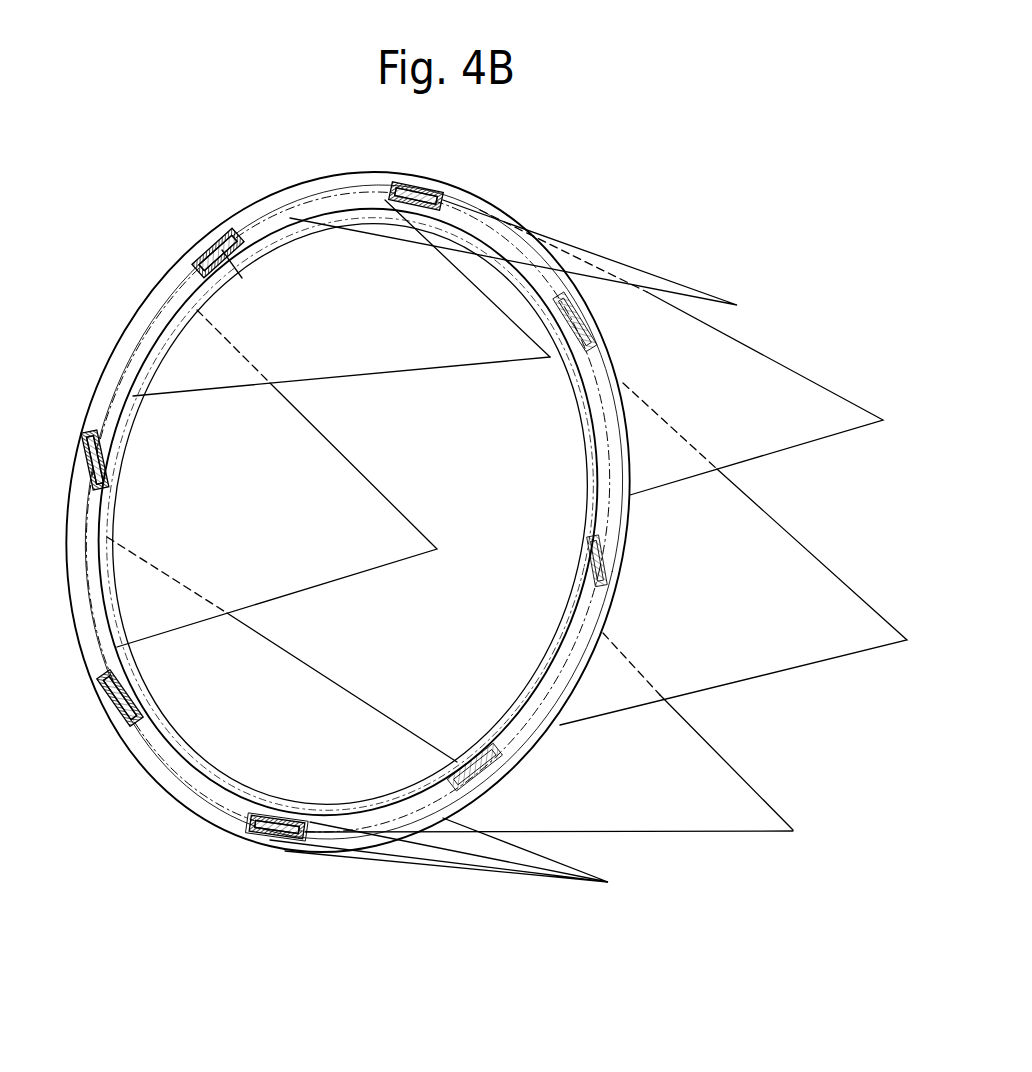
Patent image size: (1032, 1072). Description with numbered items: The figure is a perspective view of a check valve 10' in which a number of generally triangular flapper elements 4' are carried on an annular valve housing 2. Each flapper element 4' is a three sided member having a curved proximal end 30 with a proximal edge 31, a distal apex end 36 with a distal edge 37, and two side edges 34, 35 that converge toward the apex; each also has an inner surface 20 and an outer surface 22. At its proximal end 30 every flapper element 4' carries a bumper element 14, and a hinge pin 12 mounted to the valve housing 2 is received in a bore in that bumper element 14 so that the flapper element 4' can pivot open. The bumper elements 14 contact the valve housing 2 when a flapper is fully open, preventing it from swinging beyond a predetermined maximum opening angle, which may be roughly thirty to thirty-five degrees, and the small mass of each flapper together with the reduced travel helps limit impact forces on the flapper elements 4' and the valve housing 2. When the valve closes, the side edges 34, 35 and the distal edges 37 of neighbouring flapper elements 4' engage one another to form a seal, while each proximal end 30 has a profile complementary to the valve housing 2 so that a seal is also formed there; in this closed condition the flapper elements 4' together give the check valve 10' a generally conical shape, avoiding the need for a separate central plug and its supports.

The valve housing 2 is at (143, 302).
The flapper element 4' is at (183, 237).
The check valve 10' is at (693, 435).
The hinge pin 12 is at (275, 834).
The bumper element 14 is at (252, 827).
The inner surface 20 is at (720, 770).
The outer surface 22 is at (325, 790).
The proximal end 30 is at (100, 505).
The proximal edge 31 is at (143, 352).
The side edge 34 is at (493, 297).
The side edge 35 is at (462, 365).
The distal end 36 is at (608, 882).
The distal edge 37 is at (793, 831).